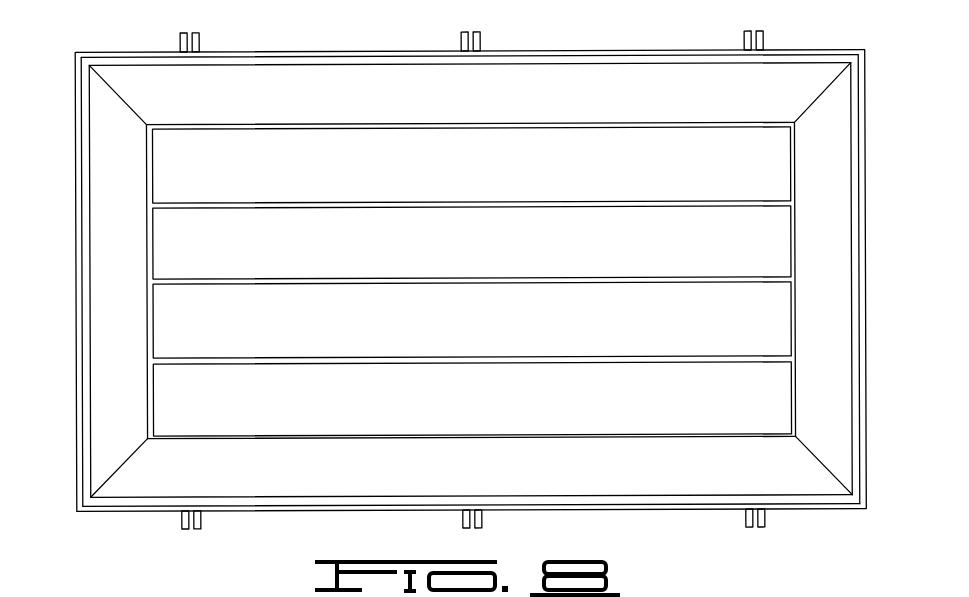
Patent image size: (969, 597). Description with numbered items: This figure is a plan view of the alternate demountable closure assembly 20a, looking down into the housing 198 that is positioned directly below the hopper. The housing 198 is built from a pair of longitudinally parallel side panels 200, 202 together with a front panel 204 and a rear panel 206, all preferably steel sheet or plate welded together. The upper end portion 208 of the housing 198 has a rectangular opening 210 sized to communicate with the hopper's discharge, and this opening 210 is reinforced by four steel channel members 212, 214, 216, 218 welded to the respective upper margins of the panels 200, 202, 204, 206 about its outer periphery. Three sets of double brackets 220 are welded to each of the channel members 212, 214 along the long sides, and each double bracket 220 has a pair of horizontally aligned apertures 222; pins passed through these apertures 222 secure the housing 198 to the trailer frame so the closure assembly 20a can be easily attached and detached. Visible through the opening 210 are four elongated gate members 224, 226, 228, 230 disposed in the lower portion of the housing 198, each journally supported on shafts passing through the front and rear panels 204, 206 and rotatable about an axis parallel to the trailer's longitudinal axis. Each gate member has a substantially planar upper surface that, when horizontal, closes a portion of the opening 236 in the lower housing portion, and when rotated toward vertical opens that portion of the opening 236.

The demountable closure assembly 20a is at (676, 22).
The housing 198 is at (723, 50).
The side panel 200 is at (357, 484).
The side panel 202 is at (309, 71).
The front panel 204 is at (102, 215).
The rear panel 206 is at (840, 272).
The upper end portion 208 is at (550, 70).
The rectangular opening 210 is at (592, 68).
The steel channel member 212 is at (292, 513).
The steel channel member 214 is at (285, 53).
The steel channel member 216 is at (77, 316).
The steel channel member 218 is at (865, 190).
The double bracket 220 is at (477, 35).
The aperture 222 is at (460, 40).
The gate member 224 is at (465, 411).
The gate member 226 is at (465, 334).
The gate member 228 is at (465, 256).
The gate member 230 is at (465, 178).
The opening 236 is at (686, 432).